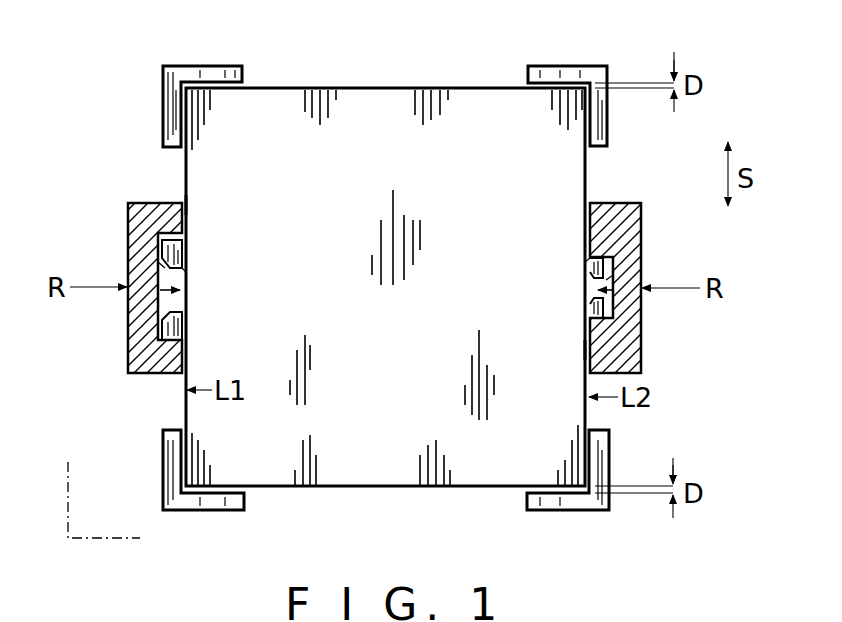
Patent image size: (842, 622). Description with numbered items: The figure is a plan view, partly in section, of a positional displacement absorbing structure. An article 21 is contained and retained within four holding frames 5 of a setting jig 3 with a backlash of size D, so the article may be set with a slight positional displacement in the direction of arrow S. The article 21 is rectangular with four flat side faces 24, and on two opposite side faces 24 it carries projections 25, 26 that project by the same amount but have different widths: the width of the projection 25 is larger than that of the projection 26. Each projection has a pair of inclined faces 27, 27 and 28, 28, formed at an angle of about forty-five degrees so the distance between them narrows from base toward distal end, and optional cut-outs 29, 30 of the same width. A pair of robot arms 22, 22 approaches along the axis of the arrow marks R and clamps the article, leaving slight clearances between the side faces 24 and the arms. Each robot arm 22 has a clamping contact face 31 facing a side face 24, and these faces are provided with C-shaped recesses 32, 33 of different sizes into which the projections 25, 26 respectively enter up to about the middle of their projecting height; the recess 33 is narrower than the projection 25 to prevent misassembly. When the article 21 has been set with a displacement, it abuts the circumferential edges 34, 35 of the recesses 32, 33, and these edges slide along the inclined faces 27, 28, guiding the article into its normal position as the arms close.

The setting jig 3 is at (113, 516).
The holding frame 5 is at (195, 68).
The article 21 is at (388, 86).
The robot arm 22 is at (135, 222).
The side face 24 is at (292, 88).
The projection 25 is at (160, 290).
The projection 26 is at (612, 292).
The inclined face 27 is at (165, 235).
The inclined face 28 is at (603, 270).
The cut-out 29 is at (186, 283).
The cut-out 30 is at (585, 286).
The clamping contact face 31 is at (186, 205).
The recess 32 is at (160, 262).
The recess 33 is at (613, 275).
The circumferential edge 34 is at (186, 238).
The circumferential edge 35 is at (585, 262).